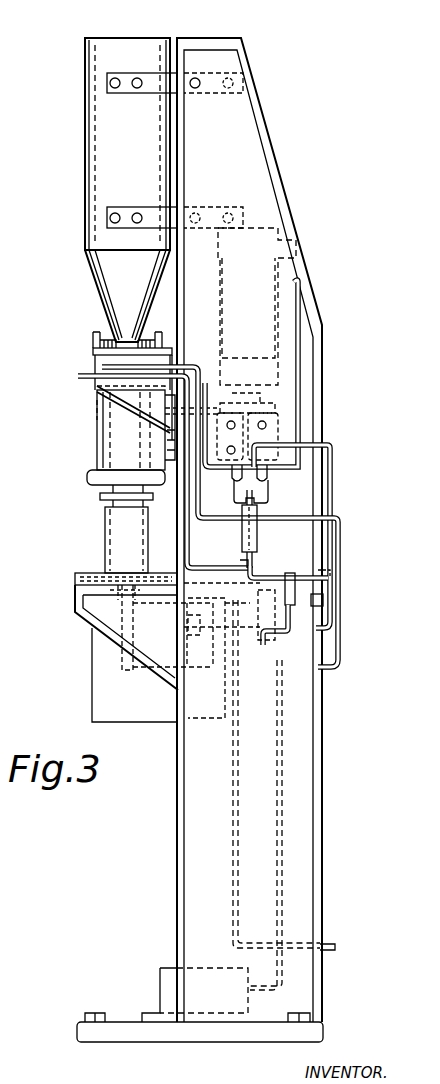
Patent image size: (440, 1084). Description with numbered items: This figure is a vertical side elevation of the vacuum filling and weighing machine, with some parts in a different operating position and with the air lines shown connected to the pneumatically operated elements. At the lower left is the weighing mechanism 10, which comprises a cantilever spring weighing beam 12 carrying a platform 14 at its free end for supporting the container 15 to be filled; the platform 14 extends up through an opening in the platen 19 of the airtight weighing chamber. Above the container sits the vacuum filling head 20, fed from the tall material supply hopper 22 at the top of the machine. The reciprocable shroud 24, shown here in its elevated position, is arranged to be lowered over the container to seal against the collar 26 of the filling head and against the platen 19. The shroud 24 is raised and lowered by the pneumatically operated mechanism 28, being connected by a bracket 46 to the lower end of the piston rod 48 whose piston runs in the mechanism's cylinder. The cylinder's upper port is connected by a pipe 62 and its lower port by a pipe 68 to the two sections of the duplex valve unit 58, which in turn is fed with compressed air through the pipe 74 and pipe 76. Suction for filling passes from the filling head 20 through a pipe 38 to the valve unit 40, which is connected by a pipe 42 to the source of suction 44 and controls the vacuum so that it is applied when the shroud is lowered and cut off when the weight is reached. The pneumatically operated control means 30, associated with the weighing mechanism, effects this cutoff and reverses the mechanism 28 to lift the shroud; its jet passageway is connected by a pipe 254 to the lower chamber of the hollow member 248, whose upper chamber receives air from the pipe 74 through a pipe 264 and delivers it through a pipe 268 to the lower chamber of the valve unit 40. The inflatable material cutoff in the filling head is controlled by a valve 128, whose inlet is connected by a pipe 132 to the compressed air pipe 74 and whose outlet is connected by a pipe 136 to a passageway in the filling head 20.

The weighing mechanism 10 is at (98, 648).
The cantilever spring weighing beam 12 is at (146, 670).
The platform 14 is at (103, 574).
The container 15 is at (107, 531).
The platen 19 is at (75, 578).
The vacuum filling head 20 is at (110, 433).
The material supply hopper 22 is at (88, 146).
The reciprocable shroud 24 is at (97, 400).
The collar 26 is at (100, 497).
The pneumatically operated mechanism 28 is at (280, 296).
The pneumatically operated control means 30 is at (194, 642).
The pipe 38 is at (218, 518).
The valve unit 40 is at (259, 542).
The pipe 42 is at (272, 519).
The source of suction 44 is at (160, 980).
The bracket 46 is at (278, 422).
The piston rod 48 is at (278, 388).
The duplex valve unit 58 is at (264, 486).
The pipe 62 is at (300, 337).
The pipe 68 is at (228, 477).
The pipe 74 is at (333, 472).
The pipe 76 is at (232, 785).
The valve 128 is at (302, 626).
The pipe 132 is at (323, 600).
The pipe 136 is at (255, 566).
The hollow member 248 is at (297, 595).
The pipe 254 is at (282, 632).
The pipe 264 is at (320, 573).
The pipe 268 is at (246, 556).